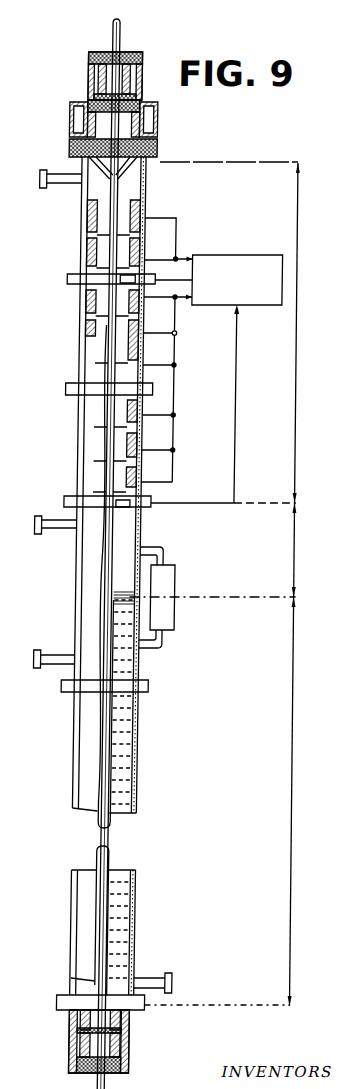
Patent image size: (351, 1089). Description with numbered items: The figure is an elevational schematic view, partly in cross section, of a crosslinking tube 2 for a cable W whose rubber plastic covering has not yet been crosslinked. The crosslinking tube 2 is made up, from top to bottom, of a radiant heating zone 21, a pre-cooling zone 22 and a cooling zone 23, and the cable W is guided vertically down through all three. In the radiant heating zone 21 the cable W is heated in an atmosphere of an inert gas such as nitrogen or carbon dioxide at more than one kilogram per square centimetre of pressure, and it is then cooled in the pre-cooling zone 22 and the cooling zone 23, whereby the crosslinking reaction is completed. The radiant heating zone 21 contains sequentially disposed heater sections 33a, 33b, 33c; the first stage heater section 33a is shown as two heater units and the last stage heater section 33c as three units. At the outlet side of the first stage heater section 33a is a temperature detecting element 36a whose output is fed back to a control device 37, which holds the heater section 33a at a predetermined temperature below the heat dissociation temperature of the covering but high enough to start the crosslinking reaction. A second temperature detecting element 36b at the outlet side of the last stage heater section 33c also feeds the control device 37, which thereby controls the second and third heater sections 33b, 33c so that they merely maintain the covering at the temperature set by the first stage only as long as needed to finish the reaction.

The cable W is at (113, 33).
The crosslinking tube 2 is at (53, 594).
The first stage heater section 33a is at (79, 207).
The second stage heater section 33b is at (80, 300).
The third stage heater section 33c is at (82, 437).
The temperature detecting element 36a is at (140, 217).
The temperature detecting element 36b is at (131, 508).
The control device 37 is at (247, 255).
The radiant heating zone 21 is at (290, 367).
The pre-cooling zone 22 is at (289, 543).
The cooling zone 23 is at (290, 797).